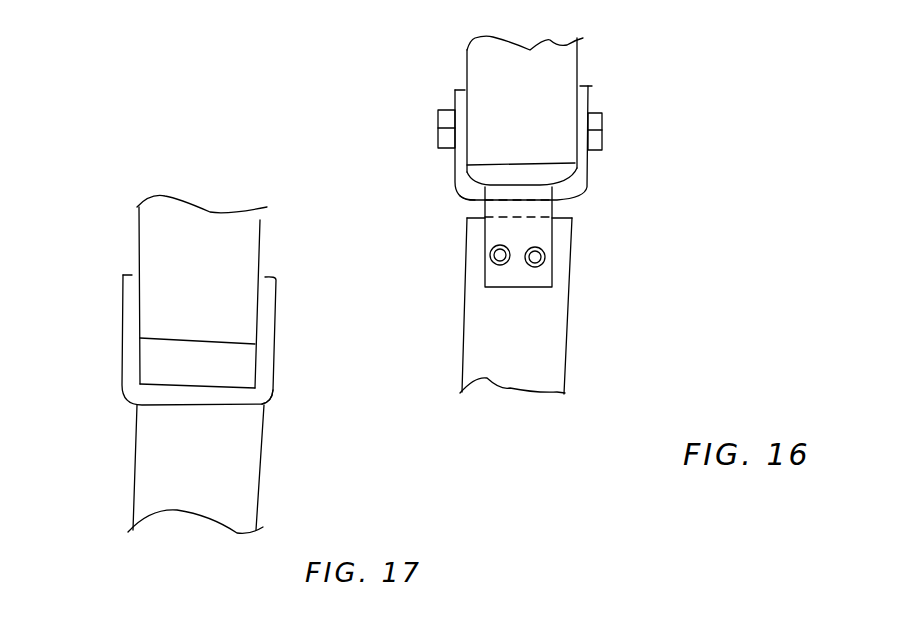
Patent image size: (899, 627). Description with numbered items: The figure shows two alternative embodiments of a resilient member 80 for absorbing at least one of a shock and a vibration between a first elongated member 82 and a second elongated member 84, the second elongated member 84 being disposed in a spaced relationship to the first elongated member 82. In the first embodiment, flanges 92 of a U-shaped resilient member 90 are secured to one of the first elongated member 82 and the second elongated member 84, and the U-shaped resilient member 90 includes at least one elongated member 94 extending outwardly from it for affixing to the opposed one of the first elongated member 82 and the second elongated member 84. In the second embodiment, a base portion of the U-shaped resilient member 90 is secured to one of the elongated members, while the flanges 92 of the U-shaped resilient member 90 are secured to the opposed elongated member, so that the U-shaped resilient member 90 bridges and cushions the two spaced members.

In FIG. 17, the resilient member 80 is at (92, 276).
In FIG. 16, the resilient member 80 is at (703, 162).
In FIG. 17, the first elongated member 82 is at (210, 245).
In FIG. 16, the first elongated member 82 is at (547, 65).
In FIG. 17, the second elongated member 84 is at (173, 487).
In FIG. 16, the second elongated member 84 is at (530, 338).
In FIG. 17, the U-shaped resilient member 90 is at (267, 393).
In FIG. 16, the U-shaped resilient member 90 is at (470, 193).
In FIG. 17, the flanges 92 is at (270, 322).
In FIG. 16, the flanges 92 is at (450, 92).
In FIG. 16, the elongated member 94 is at (528, 230).